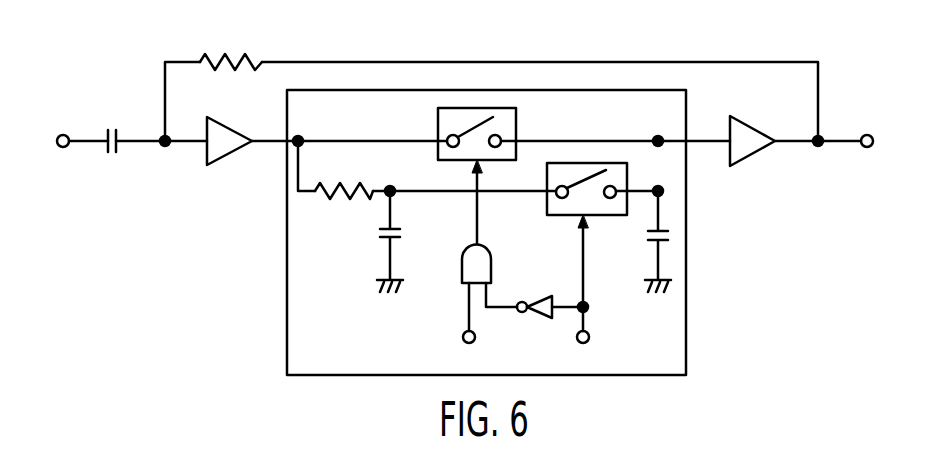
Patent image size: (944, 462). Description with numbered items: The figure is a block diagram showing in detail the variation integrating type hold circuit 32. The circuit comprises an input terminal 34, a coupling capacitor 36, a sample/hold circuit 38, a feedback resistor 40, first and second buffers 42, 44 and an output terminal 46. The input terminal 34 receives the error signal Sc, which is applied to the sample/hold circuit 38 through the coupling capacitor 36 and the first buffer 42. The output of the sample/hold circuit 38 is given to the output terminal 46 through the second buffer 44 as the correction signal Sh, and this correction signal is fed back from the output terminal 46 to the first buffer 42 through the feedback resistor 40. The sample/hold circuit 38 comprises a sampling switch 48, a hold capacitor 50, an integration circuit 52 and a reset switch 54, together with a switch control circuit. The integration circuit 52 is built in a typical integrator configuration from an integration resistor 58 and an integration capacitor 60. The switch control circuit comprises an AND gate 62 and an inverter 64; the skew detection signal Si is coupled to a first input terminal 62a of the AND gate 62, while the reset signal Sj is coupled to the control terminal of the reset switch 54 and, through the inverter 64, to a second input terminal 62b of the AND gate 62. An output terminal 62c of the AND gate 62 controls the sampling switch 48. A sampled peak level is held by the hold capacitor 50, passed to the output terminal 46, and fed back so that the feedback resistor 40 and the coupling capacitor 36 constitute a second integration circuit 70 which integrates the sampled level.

The variation integrating type hold circuit 32 is at (497, 232).
The input terminal 34 is at (67, 148).
The coupling capacitor 36 is at (114, 128).
The sample/hold circuit 38 is at (286, 298).
The feedback resistor 40 is at (233, 72).
The first buffer 42 is at (232, 157).
The second buffer 44 is at (750, 156).
The output terminal 46 is at (865, 148).
The sampling switch 48 is at (518, 124).
The hold capacitor 50 is at (680, 241).
The integration circuit 52 is at (378, 223).
The reset switch 54 is at (610, 216).
The integration resistor 58 is at (358, 178).
The integration capacitor 60 is at (408, 226).
The AND gate 62 is at (489, 251).
The first input terminal 62a is at (465, 290).
The second input terminal 62b is at (492, 287).
The output terminal 62c is at (481, 247).
The inverter 64 is at (543, 320).
The second integration circuit 70 is at (460, 82).